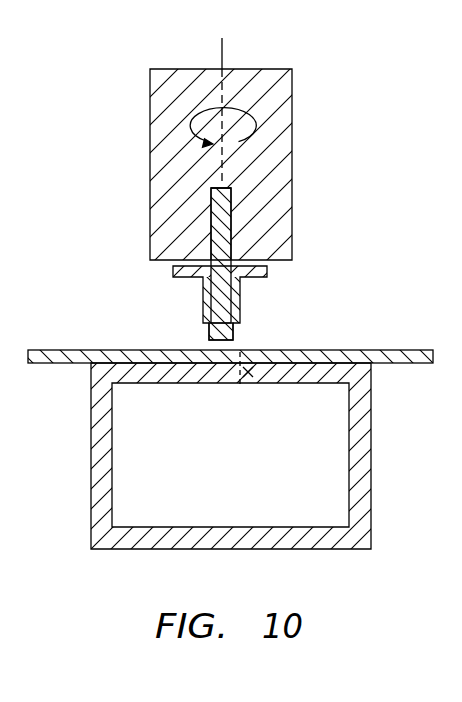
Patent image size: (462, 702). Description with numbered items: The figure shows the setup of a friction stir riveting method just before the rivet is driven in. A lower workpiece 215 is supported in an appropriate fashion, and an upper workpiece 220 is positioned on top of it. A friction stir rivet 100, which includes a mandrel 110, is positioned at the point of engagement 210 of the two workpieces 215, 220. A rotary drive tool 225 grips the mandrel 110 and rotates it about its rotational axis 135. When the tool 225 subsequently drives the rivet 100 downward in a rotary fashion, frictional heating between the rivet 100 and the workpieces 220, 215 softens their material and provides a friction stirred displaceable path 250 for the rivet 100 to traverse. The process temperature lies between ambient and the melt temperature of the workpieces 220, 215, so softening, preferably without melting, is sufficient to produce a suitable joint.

The rotational axis 135 is at (222, 52).
The rotary drive tool 225 is at (292, 100).
The mandrel 110 is at (222, 212).
The friction stir rivet 100 is at (204, 298).
The point of engagement 210 is at (209, 349).
The workpiece 220 is at (402, 364).
The friction stirred displaceable path 250 is at (249, 372).
The workpiece 215 is at (372, 500).